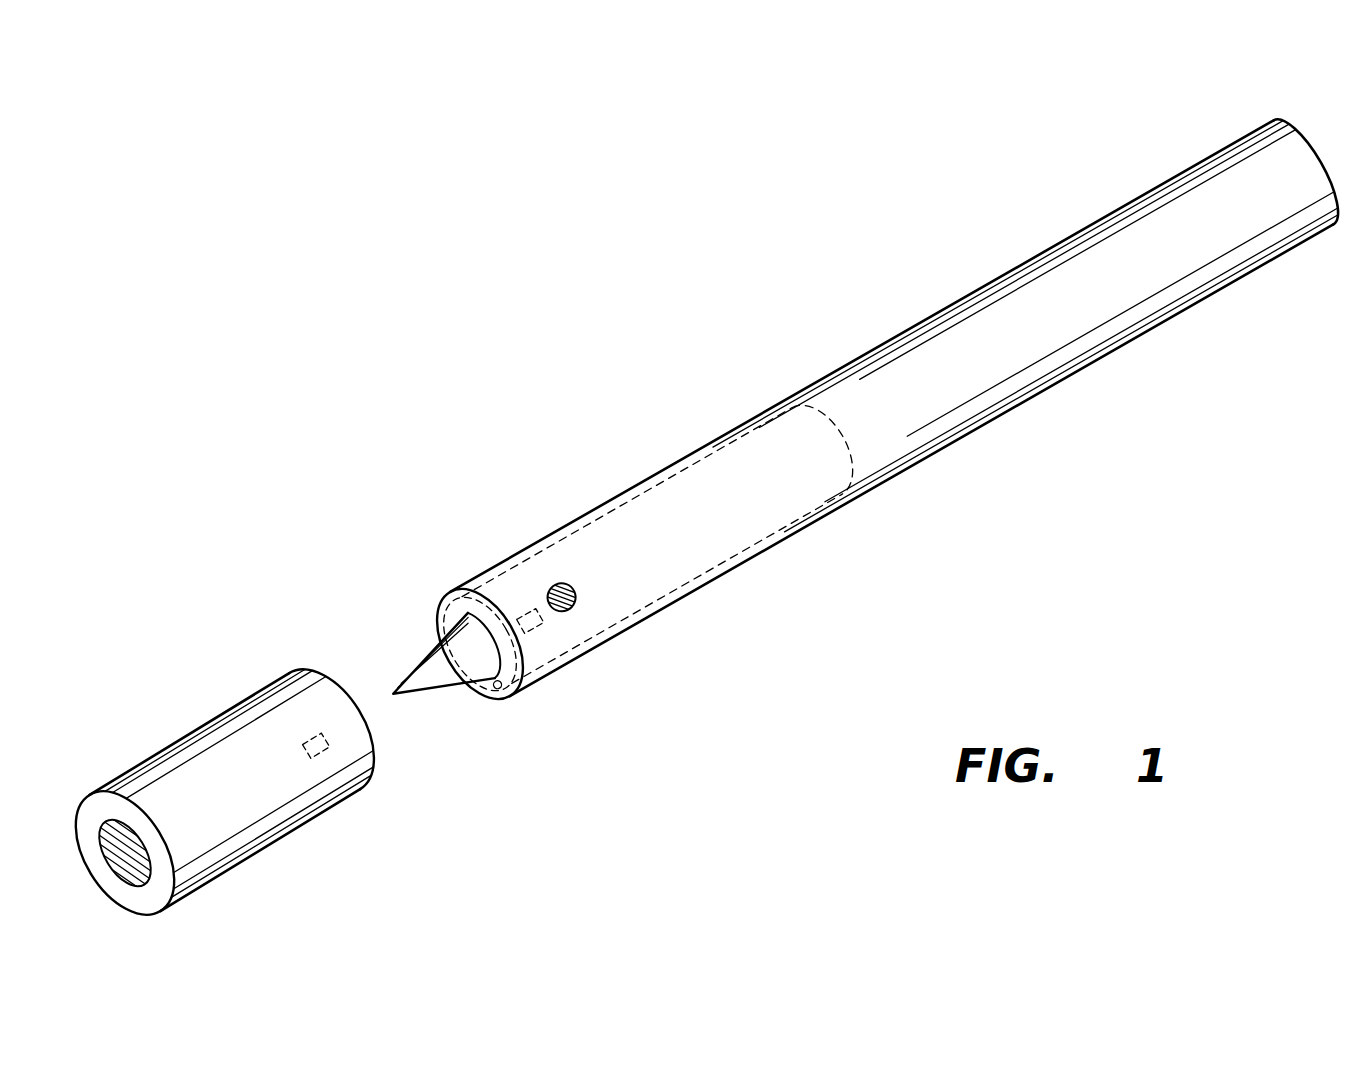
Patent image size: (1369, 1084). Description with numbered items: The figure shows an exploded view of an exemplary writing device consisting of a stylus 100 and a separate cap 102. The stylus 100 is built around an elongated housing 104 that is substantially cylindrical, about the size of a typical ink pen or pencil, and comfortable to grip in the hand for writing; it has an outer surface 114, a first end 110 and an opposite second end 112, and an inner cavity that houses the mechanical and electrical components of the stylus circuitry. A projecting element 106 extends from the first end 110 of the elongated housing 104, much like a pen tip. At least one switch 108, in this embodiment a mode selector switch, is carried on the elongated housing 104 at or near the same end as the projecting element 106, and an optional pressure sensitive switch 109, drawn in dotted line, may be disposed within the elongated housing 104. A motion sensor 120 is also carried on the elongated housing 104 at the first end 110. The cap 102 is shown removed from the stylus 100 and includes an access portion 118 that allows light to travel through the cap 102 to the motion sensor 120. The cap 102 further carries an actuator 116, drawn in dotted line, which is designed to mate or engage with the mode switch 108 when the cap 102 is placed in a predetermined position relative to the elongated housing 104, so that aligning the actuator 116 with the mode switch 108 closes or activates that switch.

The stylus 100 is at (672, 466).
The cap 102 is at (229, 709).
The elongated housing 104 is at (900, 403).
The projecting element 106 is at (444, 667).
The switch 108 is at (562, 597).
The pressure sensitive switch 109 is at (530, 621).
The first end 110 is at (479, 644).
The second end 112 is at (1312, 167).
The outer surface 114 is at (664, 538).
The actuator 116 is at (319, 757).
The access portion 118 is at (124, 852).
The motion sensor 120 is at (497, 684).